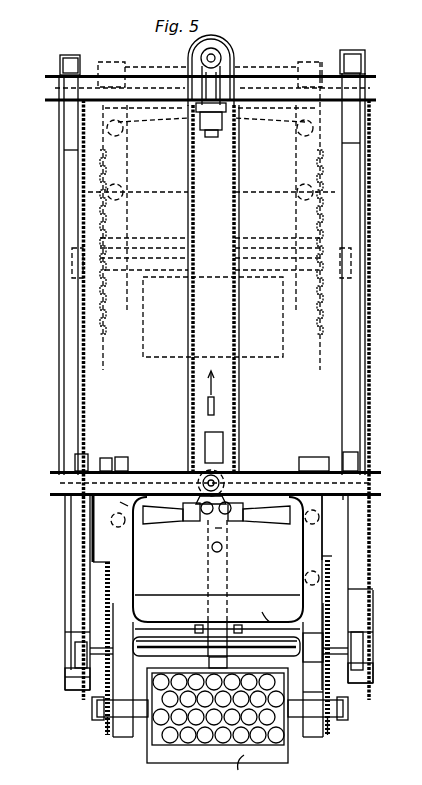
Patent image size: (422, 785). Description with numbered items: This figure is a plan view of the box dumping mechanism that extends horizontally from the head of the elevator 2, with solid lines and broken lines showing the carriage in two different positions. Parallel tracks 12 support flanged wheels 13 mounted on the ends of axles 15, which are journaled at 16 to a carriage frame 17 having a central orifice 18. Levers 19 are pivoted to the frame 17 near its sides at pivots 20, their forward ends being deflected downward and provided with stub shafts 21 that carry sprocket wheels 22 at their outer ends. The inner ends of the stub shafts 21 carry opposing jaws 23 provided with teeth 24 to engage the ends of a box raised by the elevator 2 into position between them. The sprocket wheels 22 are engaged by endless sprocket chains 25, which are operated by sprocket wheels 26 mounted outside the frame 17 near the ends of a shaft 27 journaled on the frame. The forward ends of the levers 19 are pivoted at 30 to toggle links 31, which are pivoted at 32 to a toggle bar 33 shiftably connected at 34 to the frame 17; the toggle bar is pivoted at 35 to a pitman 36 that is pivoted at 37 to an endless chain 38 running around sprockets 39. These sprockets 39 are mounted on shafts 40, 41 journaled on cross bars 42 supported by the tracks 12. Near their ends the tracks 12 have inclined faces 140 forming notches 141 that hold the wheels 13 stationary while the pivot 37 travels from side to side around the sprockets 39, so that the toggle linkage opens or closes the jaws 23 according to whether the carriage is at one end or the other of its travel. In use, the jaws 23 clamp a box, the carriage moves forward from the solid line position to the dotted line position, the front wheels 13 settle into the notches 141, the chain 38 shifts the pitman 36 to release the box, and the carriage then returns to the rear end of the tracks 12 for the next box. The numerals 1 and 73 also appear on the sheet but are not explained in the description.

The frame 1 is at (380, 433).
The elevator 2 is at (324, 556).
The tracks 12 is at (72, 198).
The flanged wheels 13 is at (75, 459).
The axles 15 is at (163, 652).
The journals 16 is at (219, 670).
The carriage frame 17 is at (120, 502).
The central orifice 18 is at (218, 559).
The levers 19 is at (104, 693).
The pivots 20 is at (134, 569).
The stub shafts 21 is at (96, 712).
The sprocket wheels 22 is at (109, 728).
The jaws 23 is at (140, 718).
The teeth 24 is at (313, 682).
The endless sprocket chains 25 is at (105, 610).
The sprocket wheels 26 is at (105, 566).
The shaft 27 is at (178, 590).
The pivots 30 is at (118, 523).
The toggle links 31 is at (168, 516).
The pivots 32 is at (205, 514).
The toggle bar 33 is at (228, 573).
The shiftable connection 34 is at (238, 625).
The pivot 35 is at (223, 548).
The pitman 36 is at (225, 530).
The pivot 37 is at (190, 470).
The endless chain 38 is at (193, 324).
The sprockets 39 is at (236, 52).
The shaft 40 is at (235, 472).
The shaft 41 is at (189, 52).
The cross bars 42 is at (114, 92).
The support 73 is at (340, 498).
The inclined faces 140 is at (70, 132).
The notches 141 is at (60, 62).